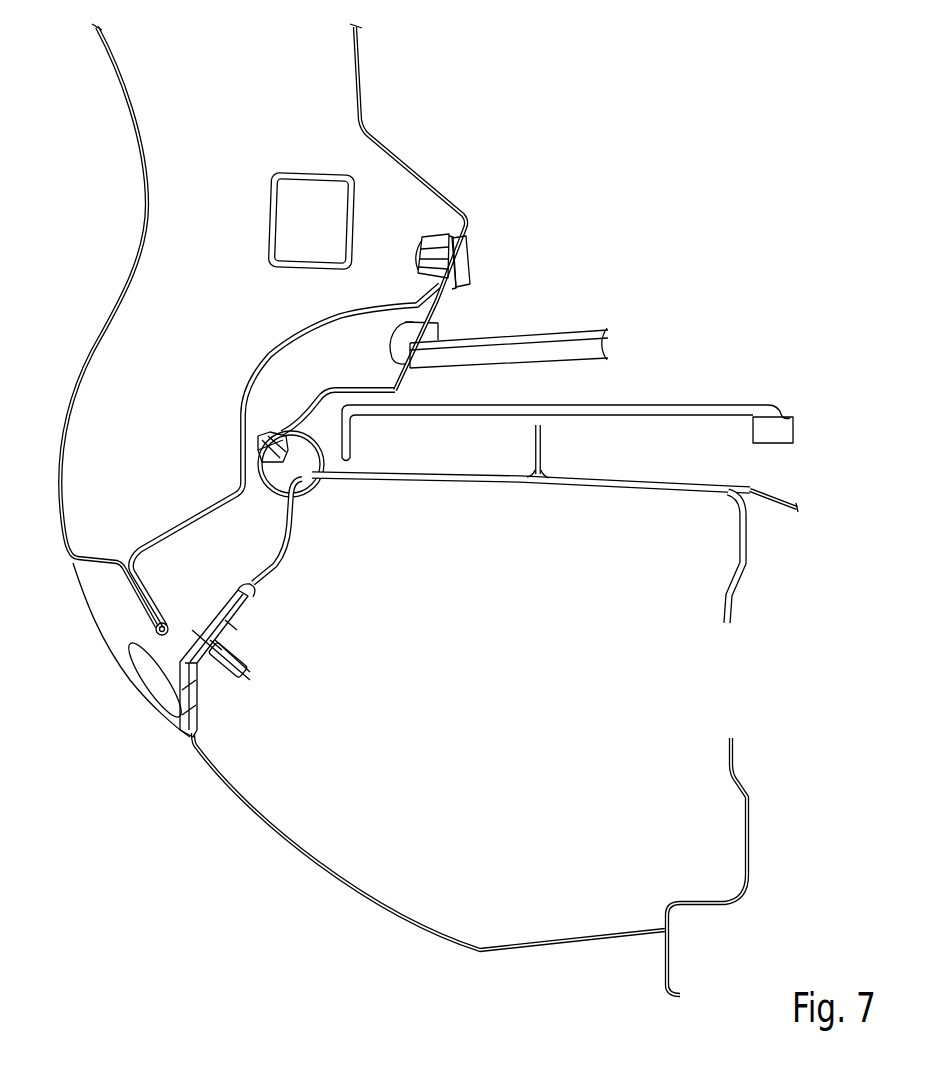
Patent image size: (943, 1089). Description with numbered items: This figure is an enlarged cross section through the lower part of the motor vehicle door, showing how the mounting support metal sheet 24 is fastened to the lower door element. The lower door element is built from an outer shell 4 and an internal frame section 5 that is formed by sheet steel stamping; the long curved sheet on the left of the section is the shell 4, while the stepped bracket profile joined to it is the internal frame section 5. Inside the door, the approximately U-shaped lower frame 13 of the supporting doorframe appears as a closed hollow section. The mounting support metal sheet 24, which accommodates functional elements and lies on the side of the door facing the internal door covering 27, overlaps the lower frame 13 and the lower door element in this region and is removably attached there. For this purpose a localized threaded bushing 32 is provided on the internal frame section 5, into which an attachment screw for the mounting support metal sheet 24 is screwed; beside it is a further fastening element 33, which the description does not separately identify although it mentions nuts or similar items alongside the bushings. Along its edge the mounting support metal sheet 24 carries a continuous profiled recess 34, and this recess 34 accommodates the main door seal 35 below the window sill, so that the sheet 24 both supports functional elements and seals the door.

The shell 4 is at (90, 350).
The internal frame section 5 is at (203, 510).
The lower frame 13 is at (292, 170).
The mounting support metal sheet 24 is at (370, 60).
The internal door covering 27 is at (570, 342).
The threaded bushings 32 is at (437, 232).
The nut 33 is at (470, 257).
The profiled recess 34 is at (276, 432).
The main door seal 35 is at (318, 500).